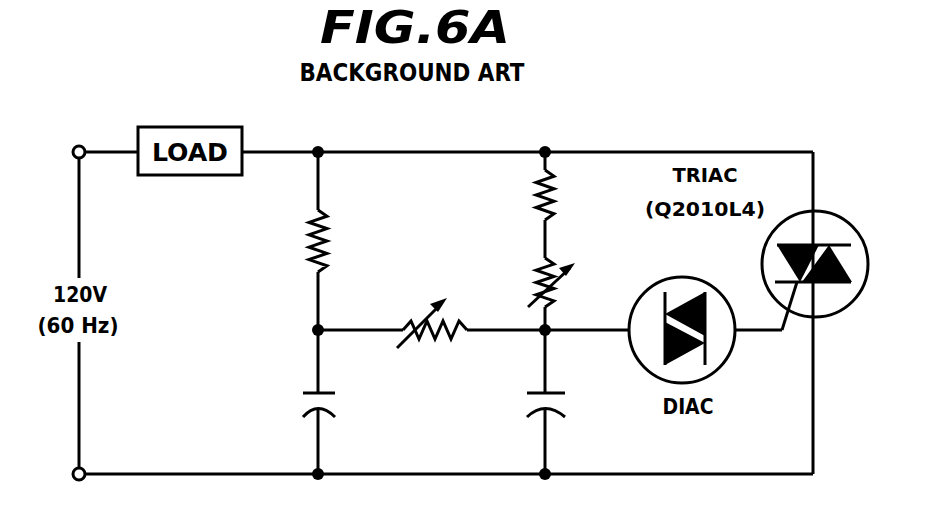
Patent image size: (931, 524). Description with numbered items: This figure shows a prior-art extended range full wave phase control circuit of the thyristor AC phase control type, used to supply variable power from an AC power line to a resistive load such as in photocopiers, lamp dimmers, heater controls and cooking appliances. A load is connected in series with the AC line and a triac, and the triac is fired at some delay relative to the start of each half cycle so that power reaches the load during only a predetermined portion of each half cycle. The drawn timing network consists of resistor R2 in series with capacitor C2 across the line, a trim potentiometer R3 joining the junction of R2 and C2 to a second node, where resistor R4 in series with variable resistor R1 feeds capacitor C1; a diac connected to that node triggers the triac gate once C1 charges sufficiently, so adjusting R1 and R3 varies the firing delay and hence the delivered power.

The variable resistor 250K R1 is at (568, 282).
The resistor 68K R2 is at (320, 241).
The trim potentiometer 100K R3 is at (430, 341).
The resistor 3.3K R4 is at (563, 195).
The capacitor 0.1 microfarad C1 is at (516, 426).
The capacitor 0.1 microfarad C2 is at (285, 424).